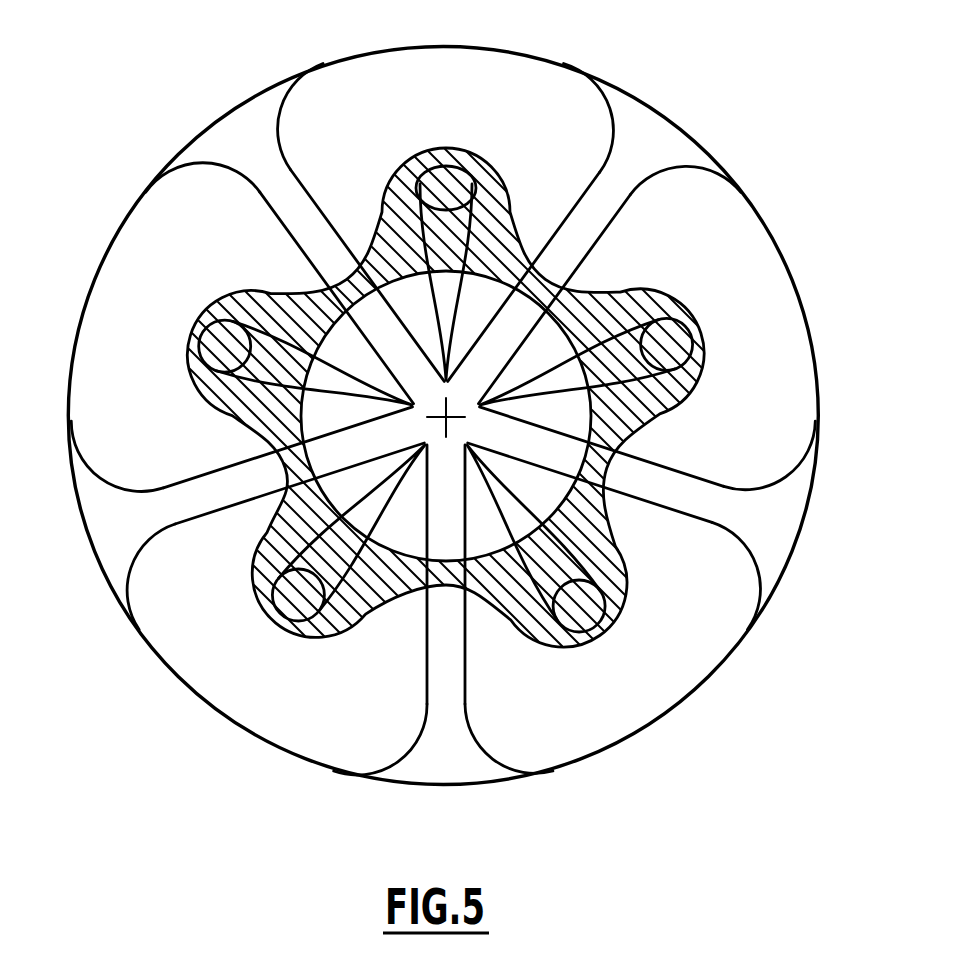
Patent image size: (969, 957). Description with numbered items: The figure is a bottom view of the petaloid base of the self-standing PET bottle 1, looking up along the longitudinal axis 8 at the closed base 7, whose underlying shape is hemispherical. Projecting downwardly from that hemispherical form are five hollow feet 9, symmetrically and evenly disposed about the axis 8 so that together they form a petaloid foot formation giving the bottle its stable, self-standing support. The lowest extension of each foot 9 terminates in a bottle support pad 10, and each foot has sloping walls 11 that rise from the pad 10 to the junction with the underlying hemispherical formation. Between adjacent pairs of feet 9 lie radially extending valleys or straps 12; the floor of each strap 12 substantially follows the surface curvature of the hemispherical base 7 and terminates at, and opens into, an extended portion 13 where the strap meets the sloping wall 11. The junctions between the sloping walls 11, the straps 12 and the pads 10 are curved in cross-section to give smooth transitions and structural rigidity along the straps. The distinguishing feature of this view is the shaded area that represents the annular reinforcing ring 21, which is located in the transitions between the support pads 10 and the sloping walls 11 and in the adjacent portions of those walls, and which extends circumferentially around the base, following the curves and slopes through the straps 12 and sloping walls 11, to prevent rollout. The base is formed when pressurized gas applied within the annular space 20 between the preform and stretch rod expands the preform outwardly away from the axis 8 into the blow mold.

The bottle 1 is at (462, 415).
The closed base 7 is at (818, 467).
The longitudinal axis 8 is at (490, 397).
The hollow feet 9 is at (548, 141).
The bottle support pads 10 is at (447, 186).
The sloping walls 11 is at (482, 75).
The valleys (straps) 12 is at (272, 171).
The extended portion 13 is at (265, 100).
The annular space 20 is at (662, 412).
The reinforcing ring 21 is at (560, 370).